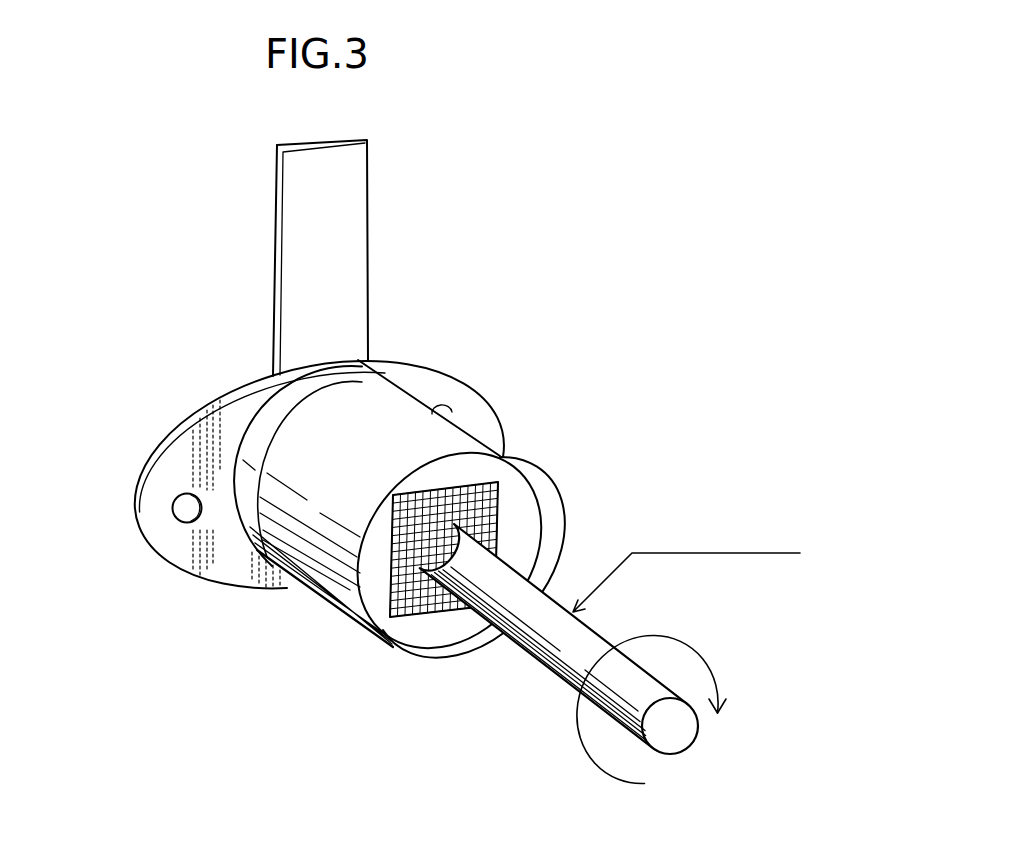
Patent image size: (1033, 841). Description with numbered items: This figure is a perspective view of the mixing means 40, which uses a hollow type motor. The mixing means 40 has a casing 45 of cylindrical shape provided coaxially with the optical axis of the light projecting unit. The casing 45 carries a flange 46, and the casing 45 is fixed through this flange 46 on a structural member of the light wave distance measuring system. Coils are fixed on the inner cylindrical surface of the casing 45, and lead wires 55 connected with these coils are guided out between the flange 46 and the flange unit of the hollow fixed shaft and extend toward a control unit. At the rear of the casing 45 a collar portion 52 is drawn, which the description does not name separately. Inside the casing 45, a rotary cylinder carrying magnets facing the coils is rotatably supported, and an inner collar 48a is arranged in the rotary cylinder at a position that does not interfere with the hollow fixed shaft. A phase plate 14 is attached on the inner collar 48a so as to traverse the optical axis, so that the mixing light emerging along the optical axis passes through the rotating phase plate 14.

The phase plate 14 is at (487, 503).
The mixing means 40 is at (518, 352).
The casing 45 is at (390, 430).
The flange 46 is at (217, 560).
The inner collar 48a is at (453, 625).
The rear collar 52 is at (270, 422).
The lead wires 55 is at (350, 197).